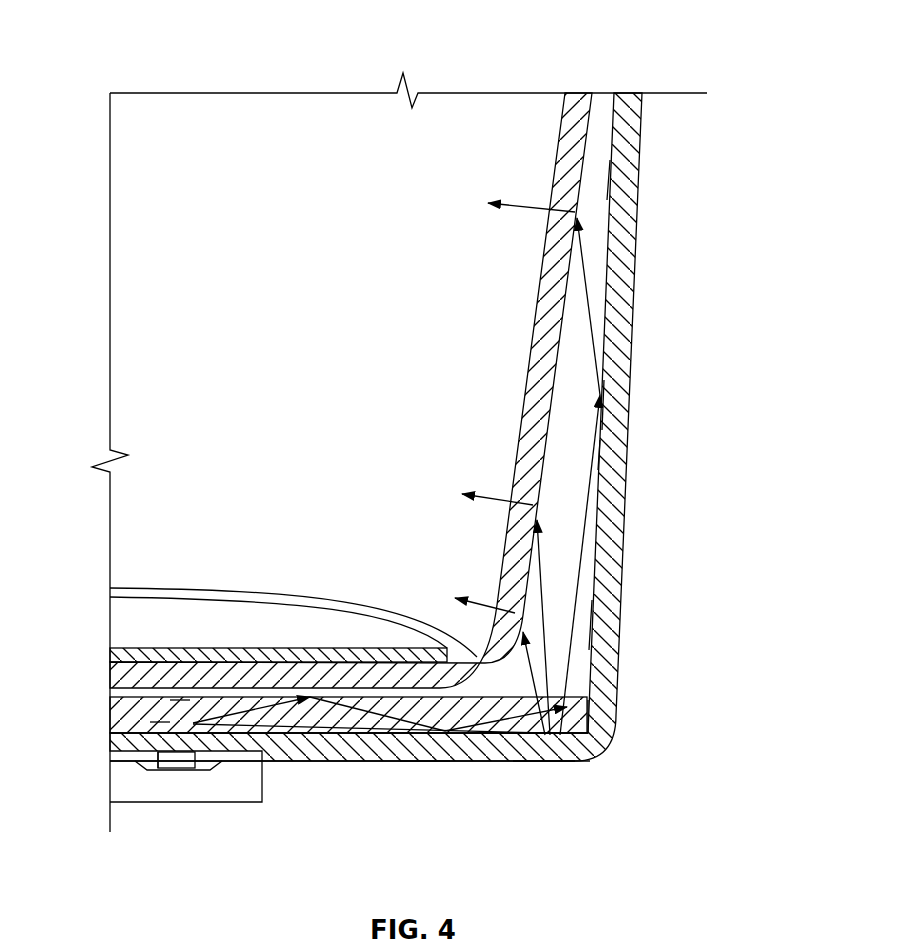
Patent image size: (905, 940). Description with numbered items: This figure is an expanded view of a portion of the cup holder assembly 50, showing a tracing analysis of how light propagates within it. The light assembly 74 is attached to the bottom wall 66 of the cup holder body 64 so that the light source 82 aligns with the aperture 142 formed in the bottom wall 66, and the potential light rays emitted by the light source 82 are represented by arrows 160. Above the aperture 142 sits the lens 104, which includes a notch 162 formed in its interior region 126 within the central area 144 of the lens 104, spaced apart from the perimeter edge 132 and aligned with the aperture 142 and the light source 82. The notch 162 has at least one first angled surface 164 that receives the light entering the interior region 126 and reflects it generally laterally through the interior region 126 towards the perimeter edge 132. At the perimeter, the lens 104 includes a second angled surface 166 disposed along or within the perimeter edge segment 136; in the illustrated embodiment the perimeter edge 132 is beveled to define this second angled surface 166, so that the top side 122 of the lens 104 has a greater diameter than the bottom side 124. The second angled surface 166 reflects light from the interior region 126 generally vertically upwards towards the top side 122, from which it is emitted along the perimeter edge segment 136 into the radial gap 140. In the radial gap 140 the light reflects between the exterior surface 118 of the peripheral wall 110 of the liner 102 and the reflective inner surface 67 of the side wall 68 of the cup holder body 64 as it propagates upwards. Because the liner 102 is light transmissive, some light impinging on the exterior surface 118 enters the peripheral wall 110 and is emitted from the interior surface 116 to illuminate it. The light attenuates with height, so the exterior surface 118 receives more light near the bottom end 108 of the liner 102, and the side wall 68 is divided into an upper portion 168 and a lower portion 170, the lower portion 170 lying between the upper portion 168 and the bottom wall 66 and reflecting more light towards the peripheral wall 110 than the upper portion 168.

The cup holder assembly 50 is at (680, 87).
The liner 102 is at (578, 100).
The cup holder body 64 is at (621, 594).
The bottom wall 66 is at (370, 763).
The inner surface 67 is at (612, 182).
The side wall 68 is at (610, 408).
The light assembly 74 is at (262, 790).
The light source 82 is at (178, 763).
The lens 104 is at (114, 713).
The bottom end 108 is at (500, 684).
The peripheral wall 110 is at (543, 318).
The interior surface 116 is at (603, 389).
The exterior surface 118 is at (560, 347).
The top side 122 is at (562, 703).
The bottom side 124 is at (508, 737).
The interior region 126 is at (426, 763).
The perimeter edge 132 is at (596, 724).
The perimeter edge segment 136 is at (590, 786).
The radial gap 140 is at (592, 622).
The aperture 142 is at (152, 753).
The central area 144 is at (214, 737).
The arrows 160 is at (290, 761).
The notch 162 is at (177, 699).
The first angled surface 164 is at (160, 722).
The second angled surface 166 is at (550, 736).
The upper portion 168 is at (742, 92).
The lower portion 170 is at (742, 366).